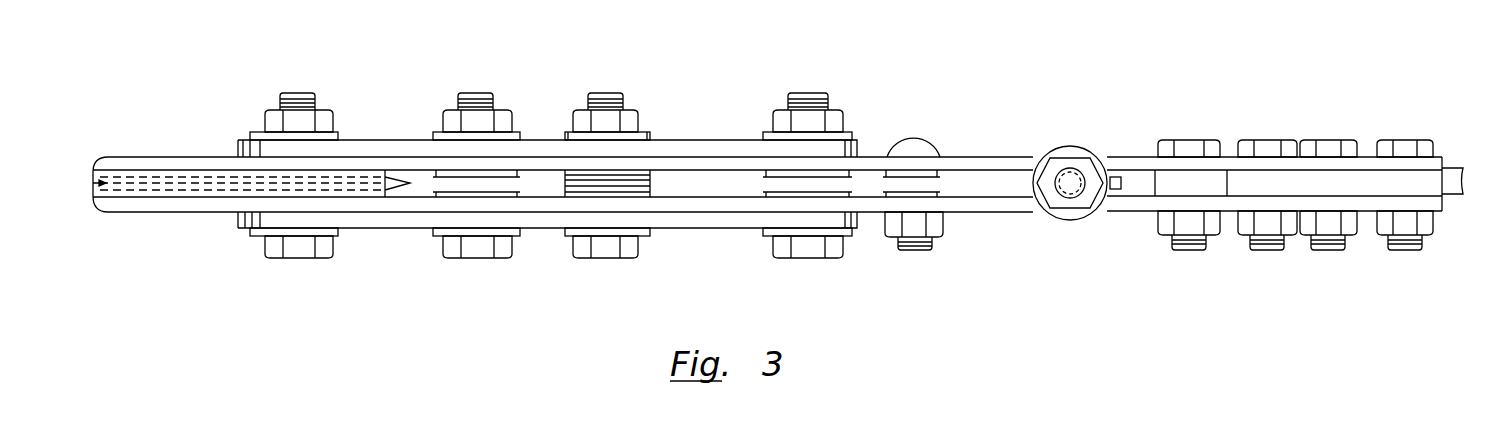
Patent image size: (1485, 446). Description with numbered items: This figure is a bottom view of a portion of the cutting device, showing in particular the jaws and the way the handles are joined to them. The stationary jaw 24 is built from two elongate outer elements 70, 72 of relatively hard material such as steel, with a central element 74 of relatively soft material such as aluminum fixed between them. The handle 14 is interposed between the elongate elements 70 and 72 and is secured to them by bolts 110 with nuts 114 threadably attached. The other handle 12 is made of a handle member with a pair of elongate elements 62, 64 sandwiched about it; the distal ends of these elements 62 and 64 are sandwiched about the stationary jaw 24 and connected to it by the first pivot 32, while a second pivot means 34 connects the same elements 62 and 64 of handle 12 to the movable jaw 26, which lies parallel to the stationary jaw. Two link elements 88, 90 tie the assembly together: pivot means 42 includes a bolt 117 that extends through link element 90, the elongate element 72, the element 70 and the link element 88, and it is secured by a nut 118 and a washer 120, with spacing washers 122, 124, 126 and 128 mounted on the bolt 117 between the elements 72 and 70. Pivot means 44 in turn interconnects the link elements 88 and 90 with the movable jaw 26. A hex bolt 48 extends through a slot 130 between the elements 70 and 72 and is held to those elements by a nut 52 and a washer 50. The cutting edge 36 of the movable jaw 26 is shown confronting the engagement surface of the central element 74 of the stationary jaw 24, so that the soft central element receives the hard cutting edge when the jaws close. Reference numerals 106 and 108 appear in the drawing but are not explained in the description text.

The handle 12 is at (1449, 163).
The handle 14 is at (1446, 210).
The stationary jaw 24 is at (979, 232).
The movable jaw 26 is at (430, 182).
The first pivot 32 is at (298, 259).
The pivot means 34 is at (467, 257).
The cutting edge 36 is at (350, 192).
The pivot means 42 is at (583, 257).
The pivot means 44 is at (808, 257).
The hex bolt 48 is at (1072, 180).
The washer 50 is at (1055, 216).
The nut 52 is at (1080, 216).
The elongate element 62 is at (240, 142).
The elongate element 64 is at (238, 222).
The outer element 70 is at (150, 157).
The outer element 72 is at (140, 211).
The central element 74 is at (93, 200).
The link element 88 is at (748, 143).
The link element 90 is at (752, 222).
The lower arm 106 is at (1138, 205).
The upper arm 108 is at (1145, 157).
The bolt 110 is at (1306, 104).
The nut 114 is at (1245, 237).
The bolt 117 is at (612, 258).
The nut 118 is at (580, 132).
The washer 120 is at (645, 182).
The spacing washer 122 is at (652, 196).
The spacing washer 124 is at (652, 192).
The spacing washer 126 is at (650, 189).
The spacing washer 128 is at (648, 185).
The slot 130 is at (1131, 177).